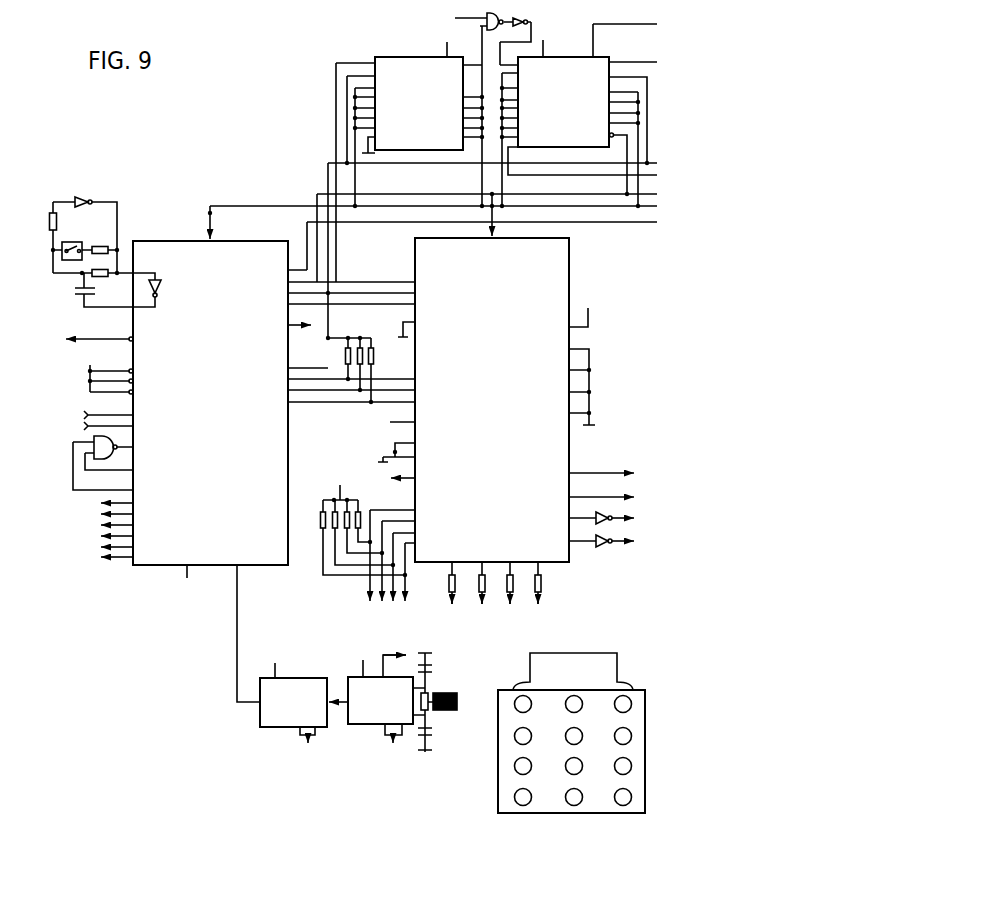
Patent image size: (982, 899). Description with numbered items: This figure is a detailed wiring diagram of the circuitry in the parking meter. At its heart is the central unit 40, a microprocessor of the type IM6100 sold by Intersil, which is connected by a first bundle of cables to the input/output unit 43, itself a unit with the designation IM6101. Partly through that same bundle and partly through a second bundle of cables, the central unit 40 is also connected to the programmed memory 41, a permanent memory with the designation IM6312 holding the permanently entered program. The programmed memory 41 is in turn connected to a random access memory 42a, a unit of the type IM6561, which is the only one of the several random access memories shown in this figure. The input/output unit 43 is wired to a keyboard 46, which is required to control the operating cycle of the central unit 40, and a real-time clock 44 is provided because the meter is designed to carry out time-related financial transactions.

The central unit 40 is at (290, 441).
The permanent programmable memory 41 is at (408, 57).
The random access memory 42a is at (571, 57).
The input/output unit 43 is at (572, 461).
The real-time clock 44 is at (353, 677).
The keyboard 46 is at (645, 767).